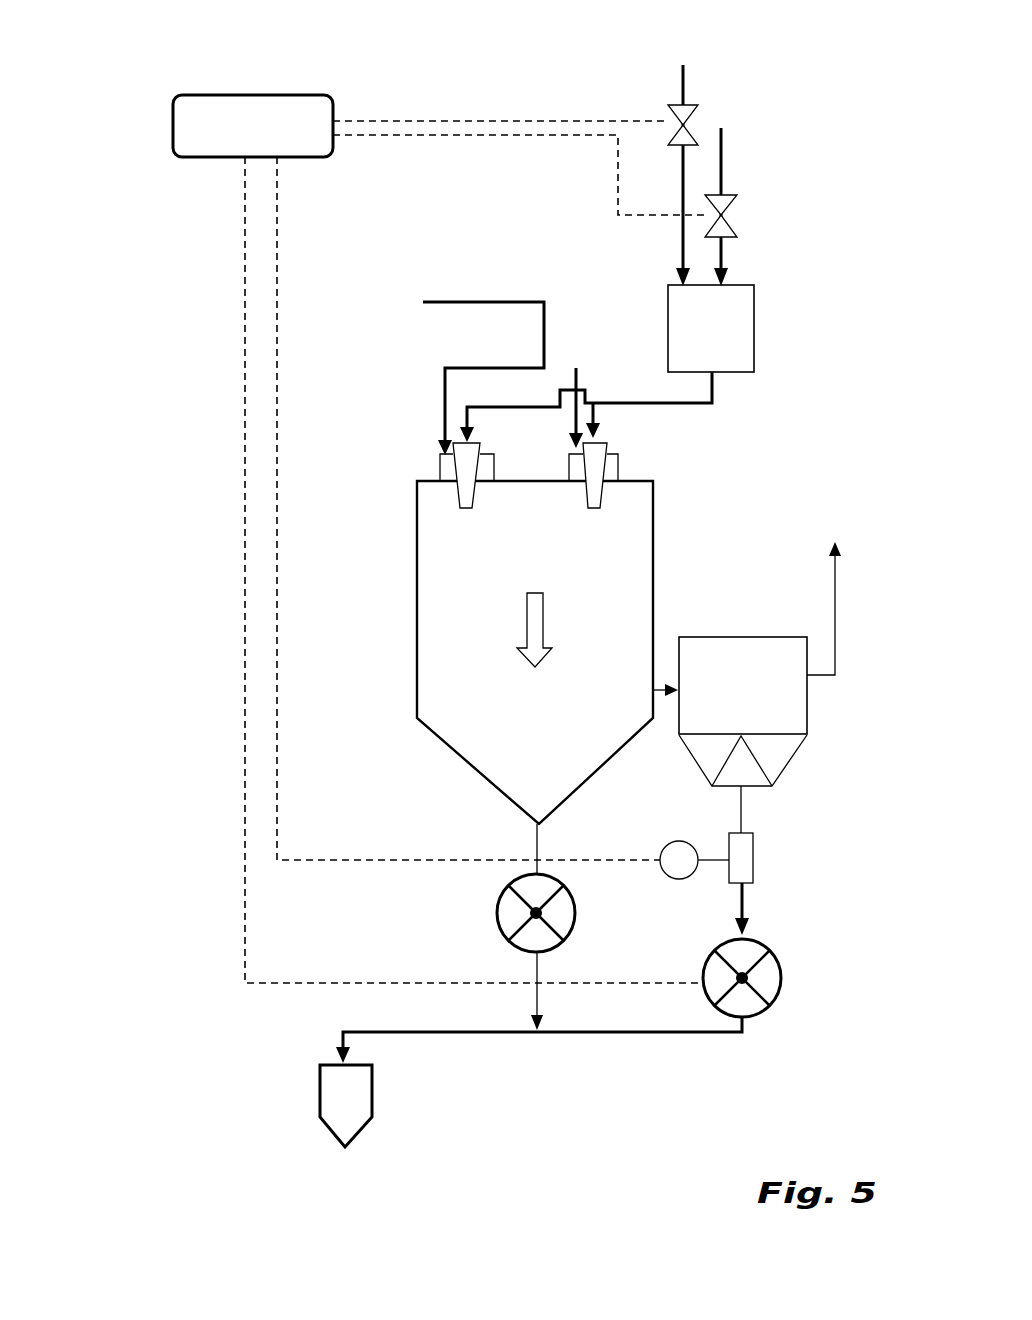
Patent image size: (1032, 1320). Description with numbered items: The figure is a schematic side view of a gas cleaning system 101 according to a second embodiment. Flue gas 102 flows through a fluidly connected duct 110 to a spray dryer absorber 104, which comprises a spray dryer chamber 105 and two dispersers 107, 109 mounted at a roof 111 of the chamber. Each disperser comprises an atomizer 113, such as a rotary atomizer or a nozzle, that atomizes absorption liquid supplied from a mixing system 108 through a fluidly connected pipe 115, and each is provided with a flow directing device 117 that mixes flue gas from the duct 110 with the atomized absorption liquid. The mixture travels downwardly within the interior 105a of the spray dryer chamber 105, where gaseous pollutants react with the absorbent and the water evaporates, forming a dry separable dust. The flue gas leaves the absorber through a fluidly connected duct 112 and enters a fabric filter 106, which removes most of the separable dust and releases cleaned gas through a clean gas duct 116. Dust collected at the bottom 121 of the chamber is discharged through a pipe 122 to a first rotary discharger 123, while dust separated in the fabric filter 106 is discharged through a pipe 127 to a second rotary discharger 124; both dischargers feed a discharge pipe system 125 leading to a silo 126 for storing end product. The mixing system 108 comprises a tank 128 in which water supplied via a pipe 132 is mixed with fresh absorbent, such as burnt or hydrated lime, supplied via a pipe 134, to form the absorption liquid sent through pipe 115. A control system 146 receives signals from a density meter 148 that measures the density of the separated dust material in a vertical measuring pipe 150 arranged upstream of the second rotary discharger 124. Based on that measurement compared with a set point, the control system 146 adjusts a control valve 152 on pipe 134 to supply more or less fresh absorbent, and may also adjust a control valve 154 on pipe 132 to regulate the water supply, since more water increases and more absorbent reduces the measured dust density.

The gas cleaning system 101 is at (108, 168).
The control system 146 is at (333, 110).
The control valve 152 is at (678, 112).
The pipe 134 is at (684, 85).
The pipe 132 is at (722, 152).
The control valve 154 is at (722, 205).
The mixing system 108 is at (829, 237).
The tank 128 is at (728, 374).
The duct 110 is at (487, 301).
The pipe 115 is at (616, 400).
The roof 111 is at (440, 462).
The atomizer 113 is at (473, 510).
The flow directing device 117 is at (445, 490).
The disperser 107 is at (473, 528).
The disperser 109 is at (592, 525).
The spray dryer chamber 105 is at (417, 602).
The interior 105a is at (617, 567).
The spray dryer absorber 104 is at (522, 652).
The flue gas 102 is at (530, 627).
The bottom 121 is at (556, 780).
The duct 112 is at (660, 686).
The fabric filter 106 is at (766, 691).
The clean gas duct 116 is at (835, 612).
The density meter 148 is at (662, 843).
The vertical measuring pipe 150 is at (754, 856).
The pipe 127 is at (742, 906).
The pipe 122 is at (537, 846).
The first rotary discharger 123 is at (497, 916).
The second rotary discharger 124 is at (782, 978).
The discharge pipe system 125 is at (503, 1035).
The silo 126 is at (320, 1095).